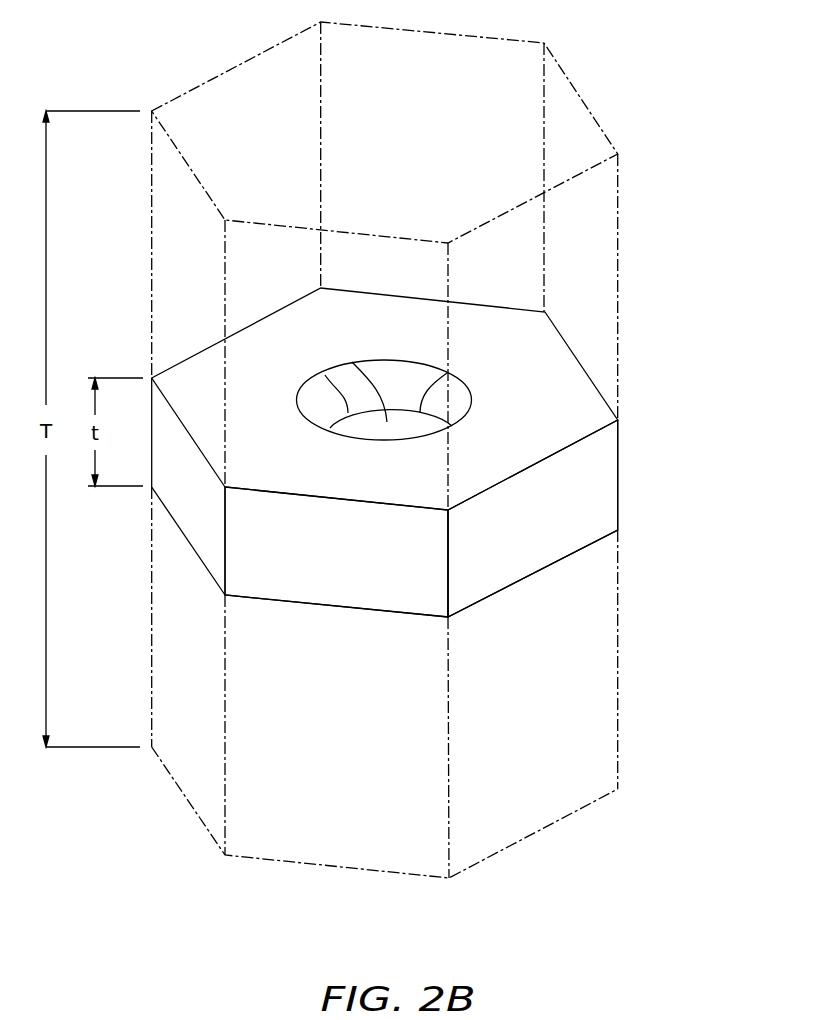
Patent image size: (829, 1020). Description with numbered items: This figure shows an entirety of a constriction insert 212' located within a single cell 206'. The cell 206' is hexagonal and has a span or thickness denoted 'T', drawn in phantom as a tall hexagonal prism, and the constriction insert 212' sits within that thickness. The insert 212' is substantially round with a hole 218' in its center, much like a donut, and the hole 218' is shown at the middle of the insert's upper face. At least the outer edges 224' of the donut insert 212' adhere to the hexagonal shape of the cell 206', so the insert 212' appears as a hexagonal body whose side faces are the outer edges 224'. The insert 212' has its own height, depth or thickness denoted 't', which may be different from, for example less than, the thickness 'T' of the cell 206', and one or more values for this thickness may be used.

The cell 206' is at (457, 392).
The constriction insert 212' is at (422, 452).
The hole 218' is at (384, 374).
The outer edges 224' is at (421, 551).